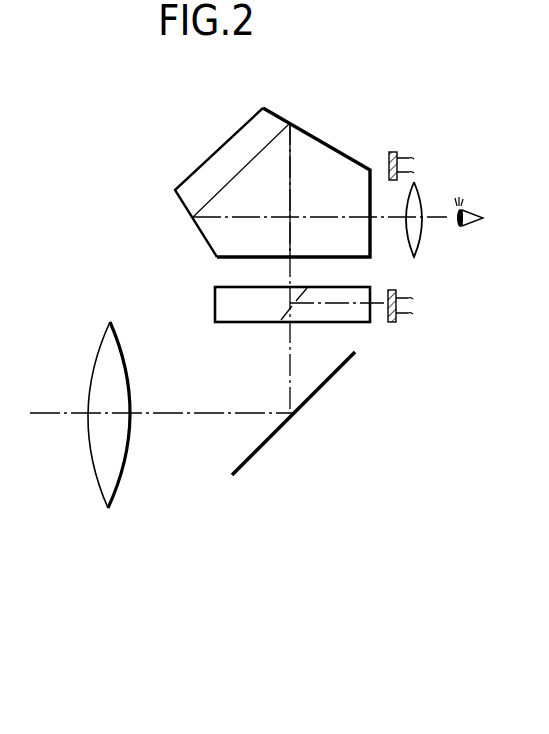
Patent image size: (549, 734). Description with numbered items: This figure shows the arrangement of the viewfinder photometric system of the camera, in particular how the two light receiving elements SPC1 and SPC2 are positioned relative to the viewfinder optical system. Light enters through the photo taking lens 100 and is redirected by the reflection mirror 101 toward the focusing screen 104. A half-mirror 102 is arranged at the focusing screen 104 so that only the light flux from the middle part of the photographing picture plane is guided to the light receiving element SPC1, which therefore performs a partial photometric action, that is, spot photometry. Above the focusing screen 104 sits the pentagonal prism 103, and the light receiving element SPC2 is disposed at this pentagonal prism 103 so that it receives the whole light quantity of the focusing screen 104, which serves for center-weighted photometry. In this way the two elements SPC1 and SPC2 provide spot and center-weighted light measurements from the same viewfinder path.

The photo taking lens 100 is at (112, 322).
The reflection mirror 101 is at (260, 447).
The half-mirror 102 is at (288, 303).
The pentagonal prism 103 is at (327, 146).
The focusing screen 104 is at (223, 322).
The light receiving element SPC1 is at (409, 295).
The light receiving element SPC2 is at (409, 152).